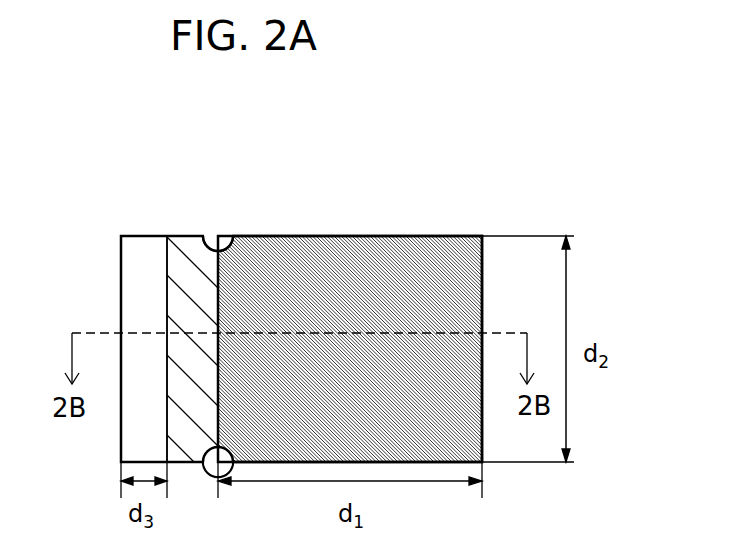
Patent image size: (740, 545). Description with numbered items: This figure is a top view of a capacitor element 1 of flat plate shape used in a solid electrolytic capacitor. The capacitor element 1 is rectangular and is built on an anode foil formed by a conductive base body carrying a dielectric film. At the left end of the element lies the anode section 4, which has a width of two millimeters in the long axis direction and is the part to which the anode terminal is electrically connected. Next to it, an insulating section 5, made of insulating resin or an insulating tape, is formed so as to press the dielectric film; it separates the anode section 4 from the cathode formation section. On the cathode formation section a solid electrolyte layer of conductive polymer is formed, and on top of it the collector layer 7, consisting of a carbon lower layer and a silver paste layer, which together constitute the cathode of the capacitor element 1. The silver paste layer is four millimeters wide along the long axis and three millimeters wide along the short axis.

The capacitor element 1 is at (452, 214).
The anode section 4 is at (137, 252).
The insulating section 5 is at (186, 253).
The collector layer 7 is at (346, 247).